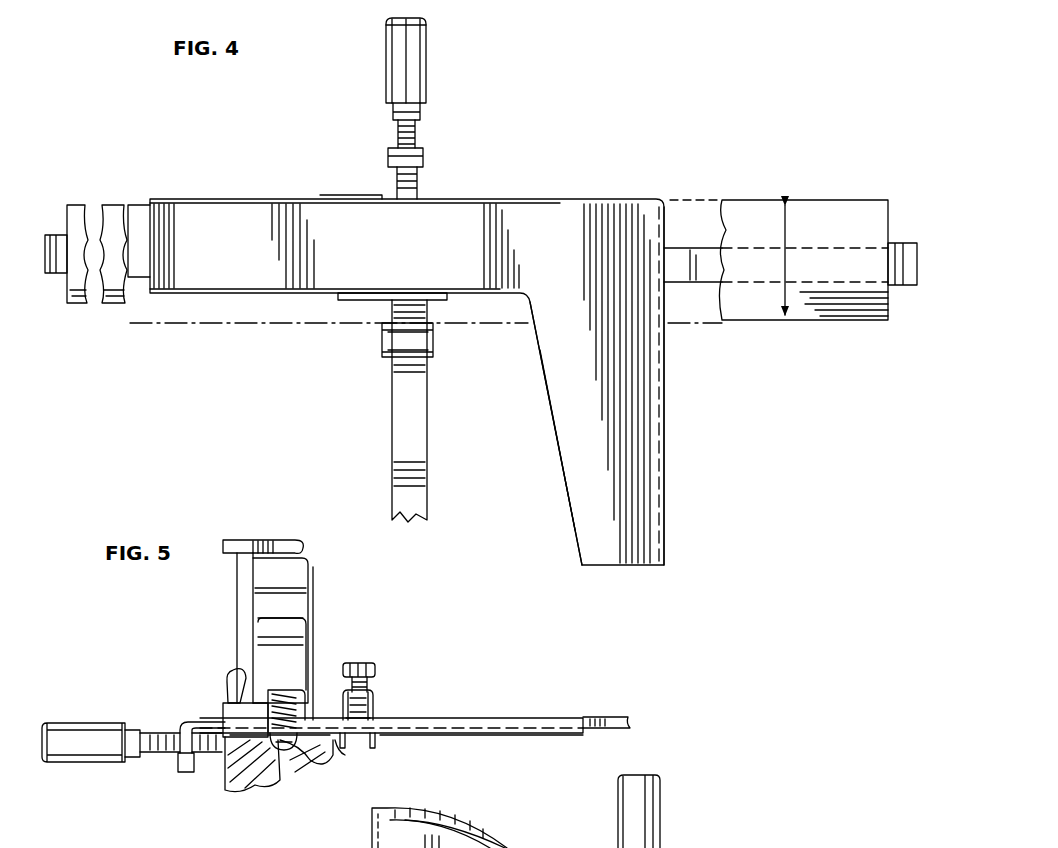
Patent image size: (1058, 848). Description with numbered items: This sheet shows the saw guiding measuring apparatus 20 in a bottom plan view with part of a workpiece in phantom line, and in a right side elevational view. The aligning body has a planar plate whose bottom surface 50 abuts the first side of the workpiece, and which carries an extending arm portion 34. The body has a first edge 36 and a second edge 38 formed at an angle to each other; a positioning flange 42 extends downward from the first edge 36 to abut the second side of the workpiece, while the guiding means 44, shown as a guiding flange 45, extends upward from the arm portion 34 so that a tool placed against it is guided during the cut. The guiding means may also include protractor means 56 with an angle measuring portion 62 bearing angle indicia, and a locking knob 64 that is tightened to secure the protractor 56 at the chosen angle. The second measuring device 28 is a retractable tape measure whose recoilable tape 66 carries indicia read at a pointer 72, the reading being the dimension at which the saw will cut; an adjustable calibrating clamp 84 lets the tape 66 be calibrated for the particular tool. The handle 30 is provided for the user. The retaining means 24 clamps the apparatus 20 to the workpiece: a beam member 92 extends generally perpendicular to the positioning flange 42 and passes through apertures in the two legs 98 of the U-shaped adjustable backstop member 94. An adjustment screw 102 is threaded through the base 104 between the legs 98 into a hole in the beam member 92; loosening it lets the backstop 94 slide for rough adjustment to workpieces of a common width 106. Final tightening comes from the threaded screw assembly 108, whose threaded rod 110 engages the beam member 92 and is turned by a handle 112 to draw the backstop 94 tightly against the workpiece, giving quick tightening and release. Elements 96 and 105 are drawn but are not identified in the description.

In FIG. 4, the tool guiding measuring apparatus 20 is at (582, 110).
In FIG. 5, the tool guiding measuring apparatus 20 is at (397, 615).
In FIG. 5, the retaining means 24 is at (107, 790).
In FIG. 5, the second measuring device 28 is at (310, 562).
In FIG. 5, the handle 30 is at (230, 557).
In FIG. 4, the extending arm portion 34 is at (585, 523).
In FIG. 4, the first edge 36 is at (636, 186).
In FIG. 4, the second edge 38 is at (666, 508).
In FIG. 5, the second edge 38 is at (487, 730).
In FIG. 4, the positioning flange 42 is at (570, 199).
In FIG. 5, the guiding means 44 is at (513, 742).
In FIG. 4, the guiding flange 45 is at (664, 478).
In FIG. 5, the guiding flange 45 is at (520, 714).
In FIG. 4, the bottom surface 50 is at (595, 350).
In FIG. 5, the bottom surface 50 is at (305, 755).
In FIG. 5, the protractor means 56 is at (487, 830).
In FIG. 5, the angle measuring portion 62 is at (505, 843).
In FIG. 5, the locking knob 64 is at (227, 683).
In FIG. 4, the tape 66 is at (136, 310).
In FIG. 5, the tape 66 is at (270, 750).
In FIG. 5, the pointer 72 is at (277, 710).
In FIG. 4, the adjustable calibrating clamp 84 is at (50, 290).
In FIG. 5, the adjustable calibrating clamp 84 is at (282, 752).
In FIG. 4, the beam member 92 is at (398, 413).
In FIG. 5, the beam member 92 is at (605, 717).
In FIG. 4, the adjustable backstop member 94 is at (435, 355).
In FIG. 5, the adjustable backstop member 94 is at (390, 702).
In FIG. 5, the pin 96 is at (376, 740).
In FIG. 4, the legs 98 is at (380, 357).
In FIG. 5, the legs 98 is at (340, 715).
In FIG. 5, the adjustment screw 102 is at (368, 667).
In FIG. 5, the base 104 is at (375, 697).
In FIG. 5, the pin 105 is at (343, 740).
In FIG. 4, the common width 106 is at (783, 238).
In FIG. 4, the threaded screw assembly 108 is at (428, 147).
In FIG. 5, the threaded screw assembly 108 is at (168, 758).
In FIG. 4, the threaded rod 110 is at (420, 135).
In FIG. 5, the threaded rod 110 is at (165, 753).
In FIG. 4, the handle 112 is at (388, 66).
In FIG. 5, the handle 112 is at (98, 735).